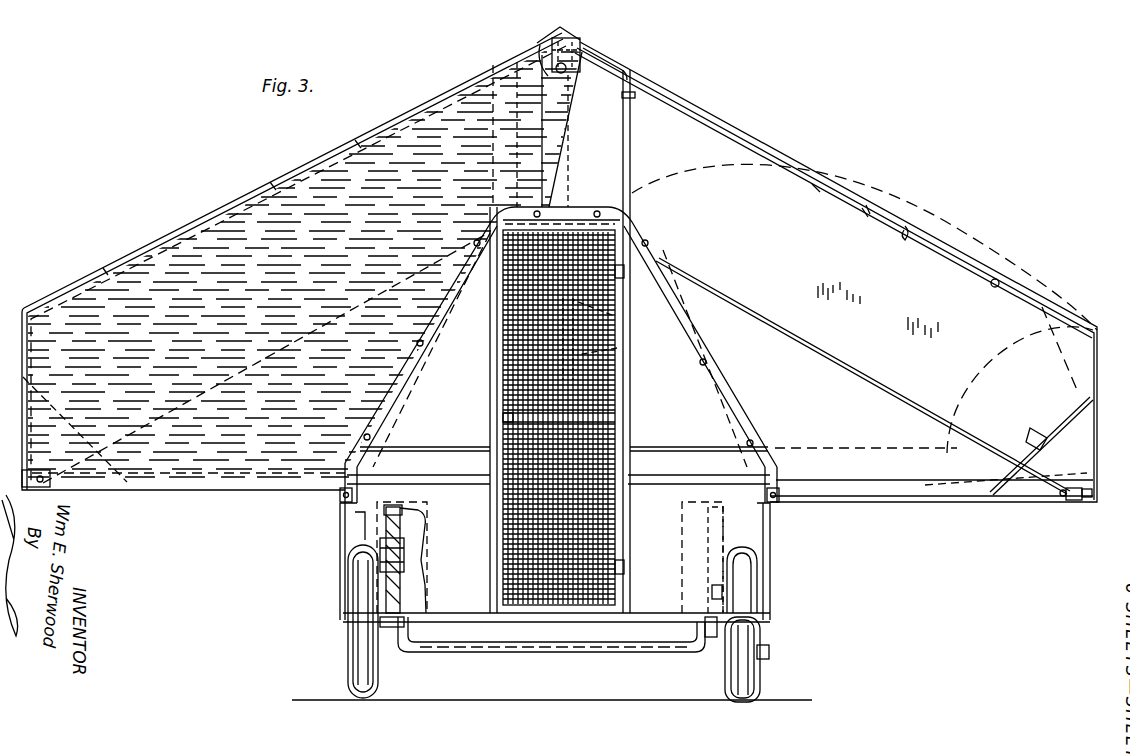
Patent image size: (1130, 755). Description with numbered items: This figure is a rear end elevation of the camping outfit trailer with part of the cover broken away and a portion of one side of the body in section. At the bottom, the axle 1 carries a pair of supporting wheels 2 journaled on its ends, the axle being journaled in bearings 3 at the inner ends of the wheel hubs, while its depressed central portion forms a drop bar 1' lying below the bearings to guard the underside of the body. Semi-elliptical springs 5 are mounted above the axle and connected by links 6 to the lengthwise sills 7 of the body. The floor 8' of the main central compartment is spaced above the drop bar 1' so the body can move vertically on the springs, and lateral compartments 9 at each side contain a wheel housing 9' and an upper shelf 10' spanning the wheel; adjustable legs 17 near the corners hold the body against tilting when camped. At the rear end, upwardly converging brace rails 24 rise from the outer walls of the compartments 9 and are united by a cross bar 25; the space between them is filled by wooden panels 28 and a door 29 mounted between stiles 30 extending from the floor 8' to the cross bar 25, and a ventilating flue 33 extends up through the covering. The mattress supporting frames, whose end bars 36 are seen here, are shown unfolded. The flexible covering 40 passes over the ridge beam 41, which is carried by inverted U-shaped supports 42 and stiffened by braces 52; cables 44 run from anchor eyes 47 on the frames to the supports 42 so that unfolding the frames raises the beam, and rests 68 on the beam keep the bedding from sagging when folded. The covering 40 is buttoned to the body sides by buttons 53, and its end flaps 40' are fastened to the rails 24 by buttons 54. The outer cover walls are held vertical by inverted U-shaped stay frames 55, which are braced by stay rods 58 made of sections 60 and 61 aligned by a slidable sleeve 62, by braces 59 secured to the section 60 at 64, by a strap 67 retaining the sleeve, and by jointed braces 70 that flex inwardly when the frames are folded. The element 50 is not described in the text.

The axle 1 is at (556, 648).
The drop bar 1' is at (551, 645).
The supporting wheels 2 is at (348, 662).
The bearings 3 is at (391, 632).
The semi-elliptical springs 5 is at (394, 586).
The links 6 is at (404, 557).
The sills 7 is at (386, 513).
The floor 8' is at (555, 648).
The lateral compartments 9 is at (549, 561).
The wheel housing 9' is at (340, 531).
The upper shelf 10' is at (550, 551).
The adjustable legs 17 is at (758, 653).
The brace rails 24 is at (404, 366).
The cross bar 25 is at (578, 218).
The wooden panels 28 is at (467, 419).
The door 29 is at (598, 380).
The stiles 30 is at (490, 447).
The ventilating flue 33 is at (566, 162).
The end bars 36 is at (863, 495).
The flexible covering 40 is at (574, 284).
The end flaps 40' is at (479, 264).
The ridge beam 41 is at (583, 42).
The inverted U-shaped supports 42 is at (493, 150).
The cables 44 is at (272, 362).
The anchor eyes 47 is at (50, 490).
The ridge cap 50 is at (558, 33).
The braces 52 is at (519, 82).
The buttons 53 is at (342, 504).
The buttons 54 is at (428, 340).
The stay frames 55 is at (966, 447).
The stay rods 58 is at (867, 210).
The braces 59 is at (994, 280).
The stay rod section 60 is at (105, 268).
The stay rod section 61 is at (358, 142).
The sleeve 62 is at (273, 184).
The brace attachment 64 is at (905, 240).
The strap 67 is at (816, 188).
The rests 68 is at (545, 45).
The jointed braces 70 is at (65, 418).